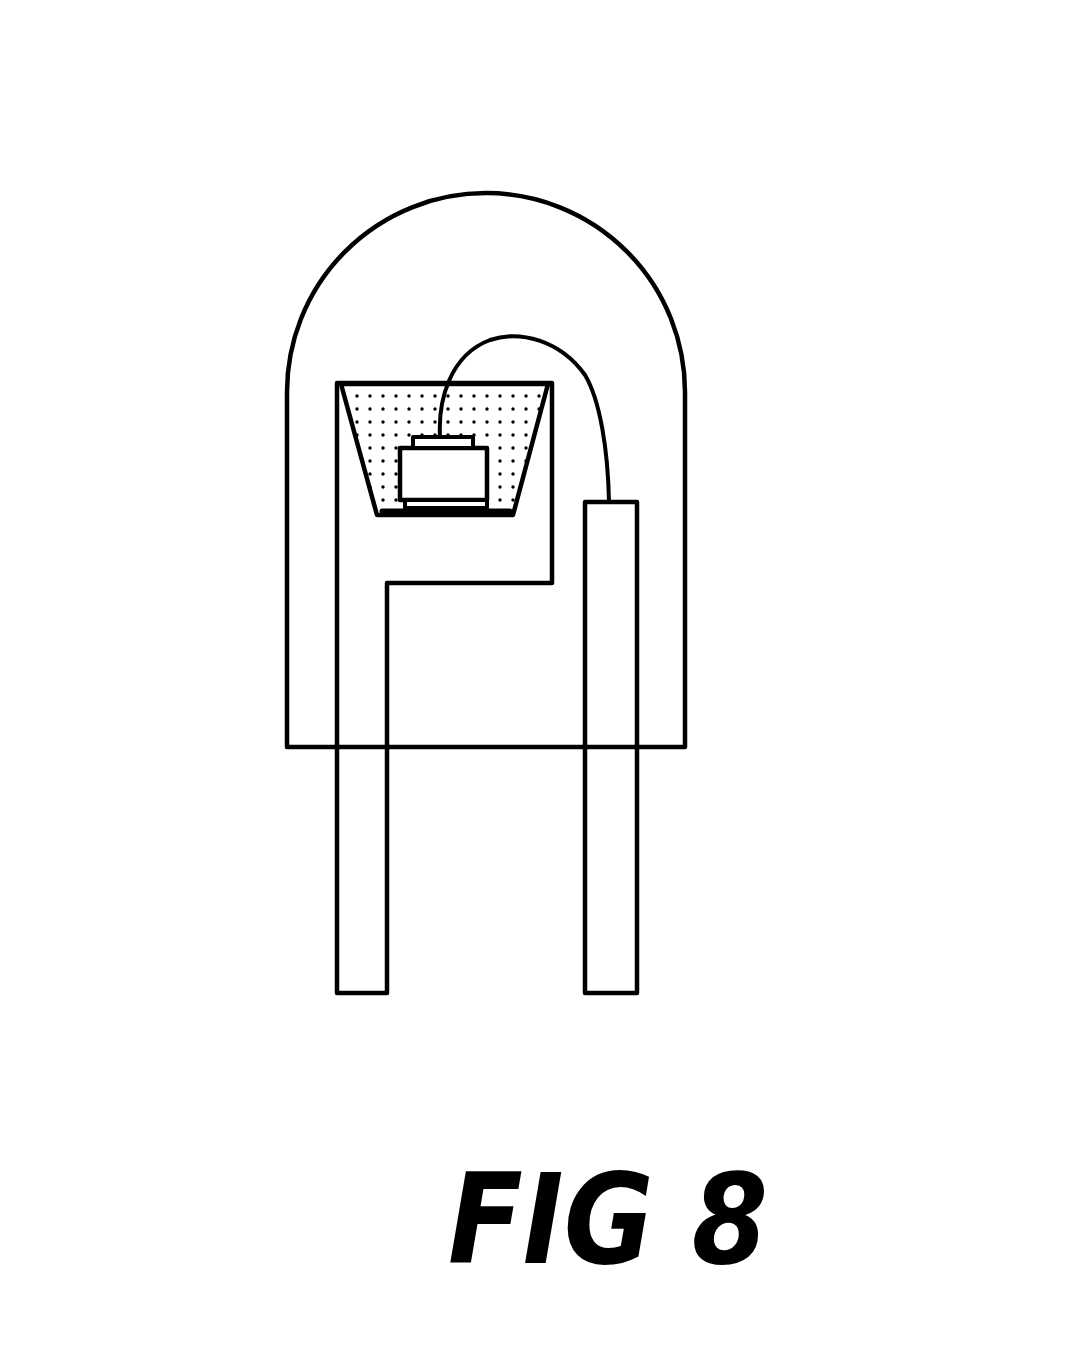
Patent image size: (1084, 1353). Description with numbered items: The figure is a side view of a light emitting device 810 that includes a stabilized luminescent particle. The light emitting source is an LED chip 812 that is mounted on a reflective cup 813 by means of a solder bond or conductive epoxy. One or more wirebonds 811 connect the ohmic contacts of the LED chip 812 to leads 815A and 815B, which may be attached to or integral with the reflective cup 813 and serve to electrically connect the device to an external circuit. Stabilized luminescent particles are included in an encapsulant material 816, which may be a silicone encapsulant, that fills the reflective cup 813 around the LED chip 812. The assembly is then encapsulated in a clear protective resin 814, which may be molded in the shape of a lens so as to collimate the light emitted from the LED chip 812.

The light emitting device 810 is at (492, 508).
The wirebond 811 is at (552, 340).
The LED chip 812 is at (390, 413).
The reflective cup 813 is at (367, 538).
The clear protective resin 814 is at (532, 238).
The lead 815A is at (360, 933).
The lead 815B is at (613, 918).
The encapsulant material 816 is at (380, 427).